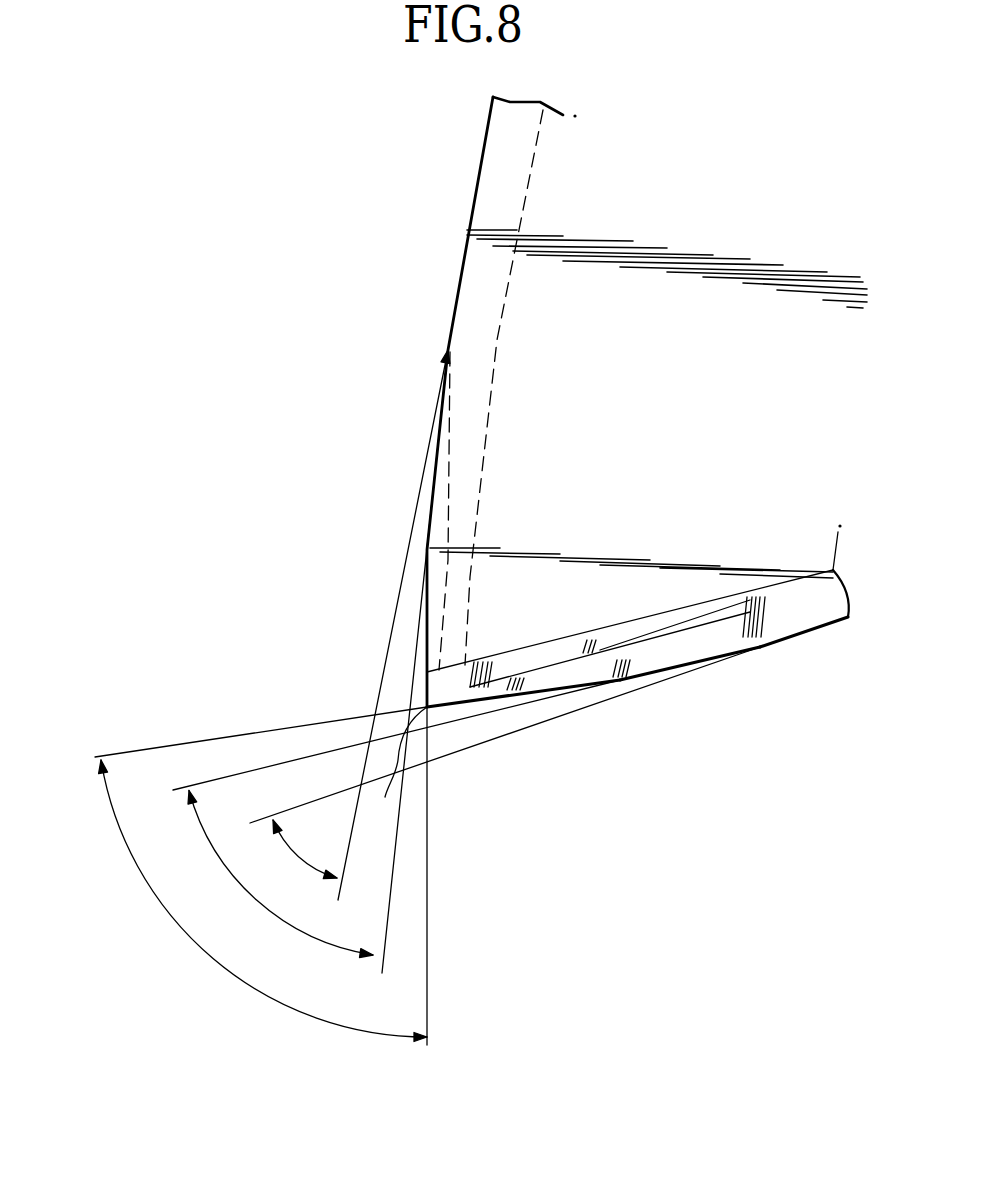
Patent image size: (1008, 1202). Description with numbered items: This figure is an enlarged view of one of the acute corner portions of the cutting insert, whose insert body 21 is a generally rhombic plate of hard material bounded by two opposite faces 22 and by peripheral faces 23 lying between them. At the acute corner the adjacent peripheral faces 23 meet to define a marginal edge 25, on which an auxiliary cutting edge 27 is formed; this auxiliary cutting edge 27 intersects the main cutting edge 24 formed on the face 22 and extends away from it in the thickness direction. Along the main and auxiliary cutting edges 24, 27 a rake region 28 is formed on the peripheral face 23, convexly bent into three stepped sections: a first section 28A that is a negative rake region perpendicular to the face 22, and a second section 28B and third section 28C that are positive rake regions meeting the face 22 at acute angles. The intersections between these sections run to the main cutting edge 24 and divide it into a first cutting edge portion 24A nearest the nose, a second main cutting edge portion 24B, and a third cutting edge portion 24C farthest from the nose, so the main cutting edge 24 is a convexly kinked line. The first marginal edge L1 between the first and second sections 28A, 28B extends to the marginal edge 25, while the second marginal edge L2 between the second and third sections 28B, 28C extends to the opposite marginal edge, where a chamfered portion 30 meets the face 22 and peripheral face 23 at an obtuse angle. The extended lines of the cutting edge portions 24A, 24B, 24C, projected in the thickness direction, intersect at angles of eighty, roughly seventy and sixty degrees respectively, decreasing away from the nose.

The insert body 21 is at (503, 140).
The face 22 is at (652, 192).
The peripheral face 23 is at (470, 177).
The main cutting edge 24 is at (268, 283).
The first cutting edge portion 24A is at (430, 577).
The second main cutting edge portion 24B is at (437, 420).
The third cutting edge portion 24C is at (466, 258).
The marginal edge 25 is at (395, 769).
The auxiliary cutting edge 27 is at (427, 705).
The rake region 28 is at (735, 813).
The first section 28A is at (427, 648).
The second section 28B is at (437, 518).
The third section 28C is at (473, 377).
The chamfered portion 30 is at (470, 608).
The first marginal edge L1 is at (565, 700).
The second marginal edge L2 is at (450, 448).